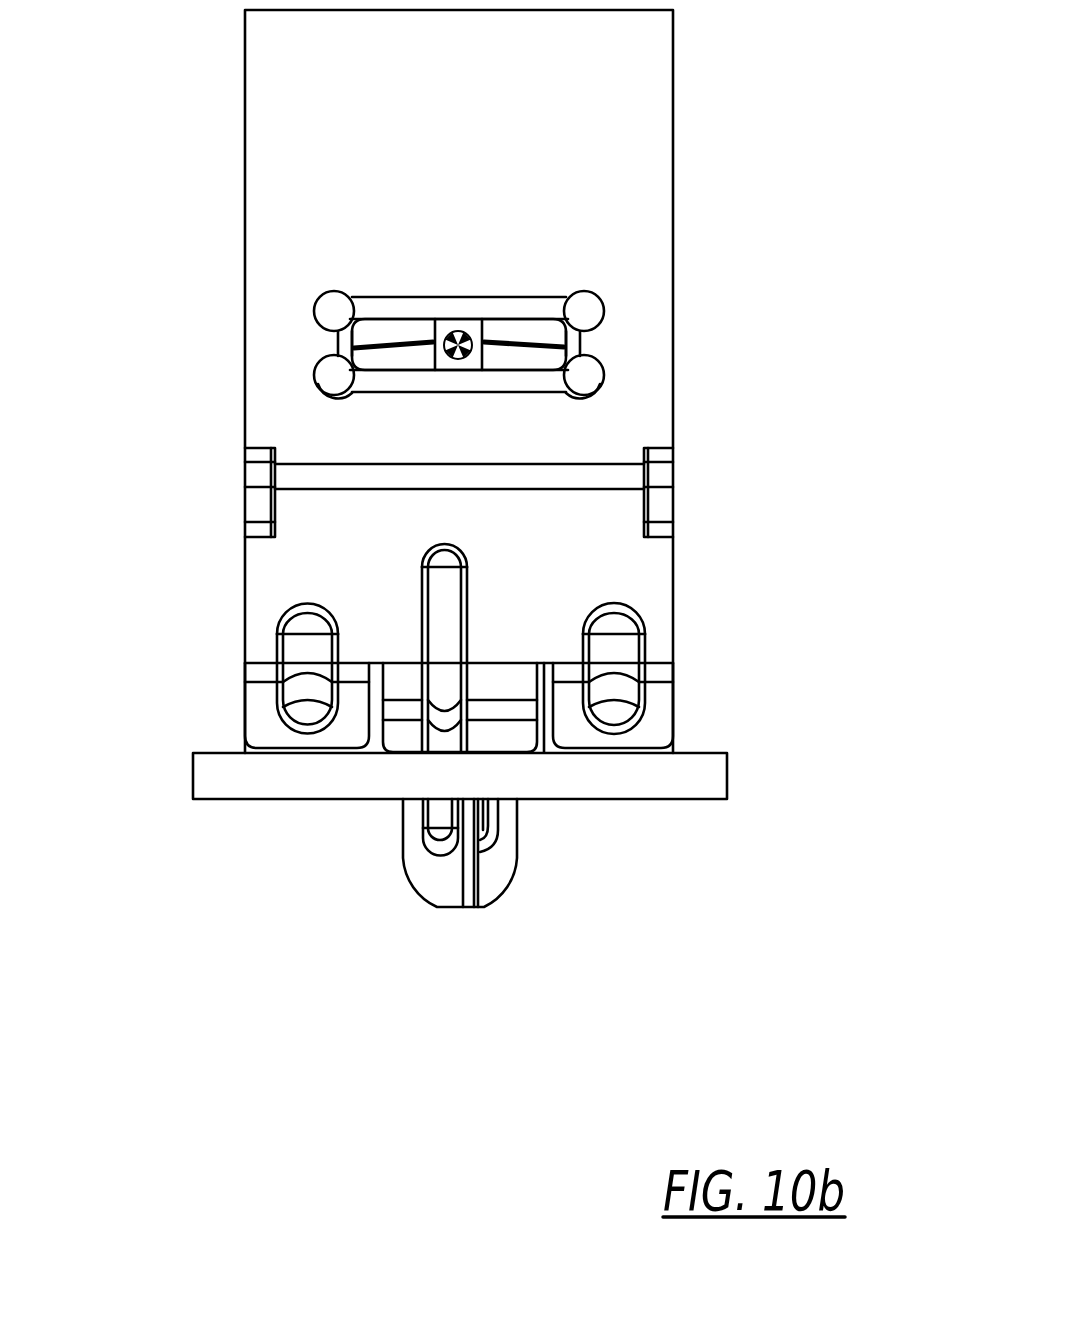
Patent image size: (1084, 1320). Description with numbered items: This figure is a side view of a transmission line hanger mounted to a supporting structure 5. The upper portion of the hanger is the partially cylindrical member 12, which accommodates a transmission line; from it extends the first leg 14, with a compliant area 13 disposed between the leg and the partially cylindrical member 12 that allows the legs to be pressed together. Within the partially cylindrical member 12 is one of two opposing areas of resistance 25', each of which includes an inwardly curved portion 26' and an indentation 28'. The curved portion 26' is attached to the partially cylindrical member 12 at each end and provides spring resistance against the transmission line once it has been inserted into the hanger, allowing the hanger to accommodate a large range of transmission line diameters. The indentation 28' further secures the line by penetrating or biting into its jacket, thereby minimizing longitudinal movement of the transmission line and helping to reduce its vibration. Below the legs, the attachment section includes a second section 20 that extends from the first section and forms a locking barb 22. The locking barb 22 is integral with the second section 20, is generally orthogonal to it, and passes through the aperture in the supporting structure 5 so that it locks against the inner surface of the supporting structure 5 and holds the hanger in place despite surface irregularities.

The partially cylindrical member 12 is at (270, 80).
The compliant area 13 is at (605, 475).
The first leg 14 is at (655, 567).
The supporting structure 5 is at (728, 774).
The second section 20 is at (428, 866).
The locking barb 22 is at (483, 866).
The area of resistance 25' is at (374, 294).
The inwardly curved portion 26' is at (459, 280).
The indentation 28' is at (430, 280).